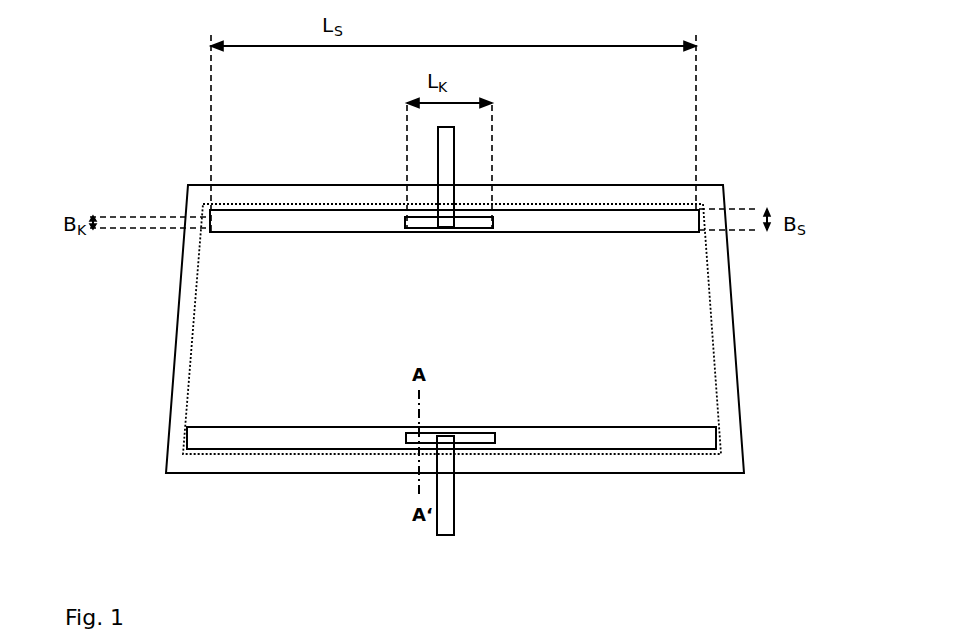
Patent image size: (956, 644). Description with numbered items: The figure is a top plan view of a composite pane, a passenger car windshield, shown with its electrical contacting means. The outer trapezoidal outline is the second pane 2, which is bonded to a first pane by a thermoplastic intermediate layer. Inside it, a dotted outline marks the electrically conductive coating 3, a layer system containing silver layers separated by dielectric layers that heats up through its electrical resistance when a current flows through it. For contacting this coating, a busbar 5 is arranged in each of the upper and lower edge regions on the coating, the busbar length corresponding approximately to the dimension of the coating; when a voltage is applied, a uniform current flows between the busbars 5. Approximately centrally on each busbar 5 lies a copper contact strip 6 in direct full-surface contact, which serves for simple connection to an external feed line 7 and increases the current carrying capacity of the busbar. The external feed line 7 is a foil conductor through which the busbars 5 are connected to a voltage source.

The second pane 2 is at (195, 250).
The electrically conductive coating 3 is at (195, 325).
The busbar 5 is at (239, 212).
The contact strip 6 is at (421, 223).
The external feed line 7 is at (448, 159).